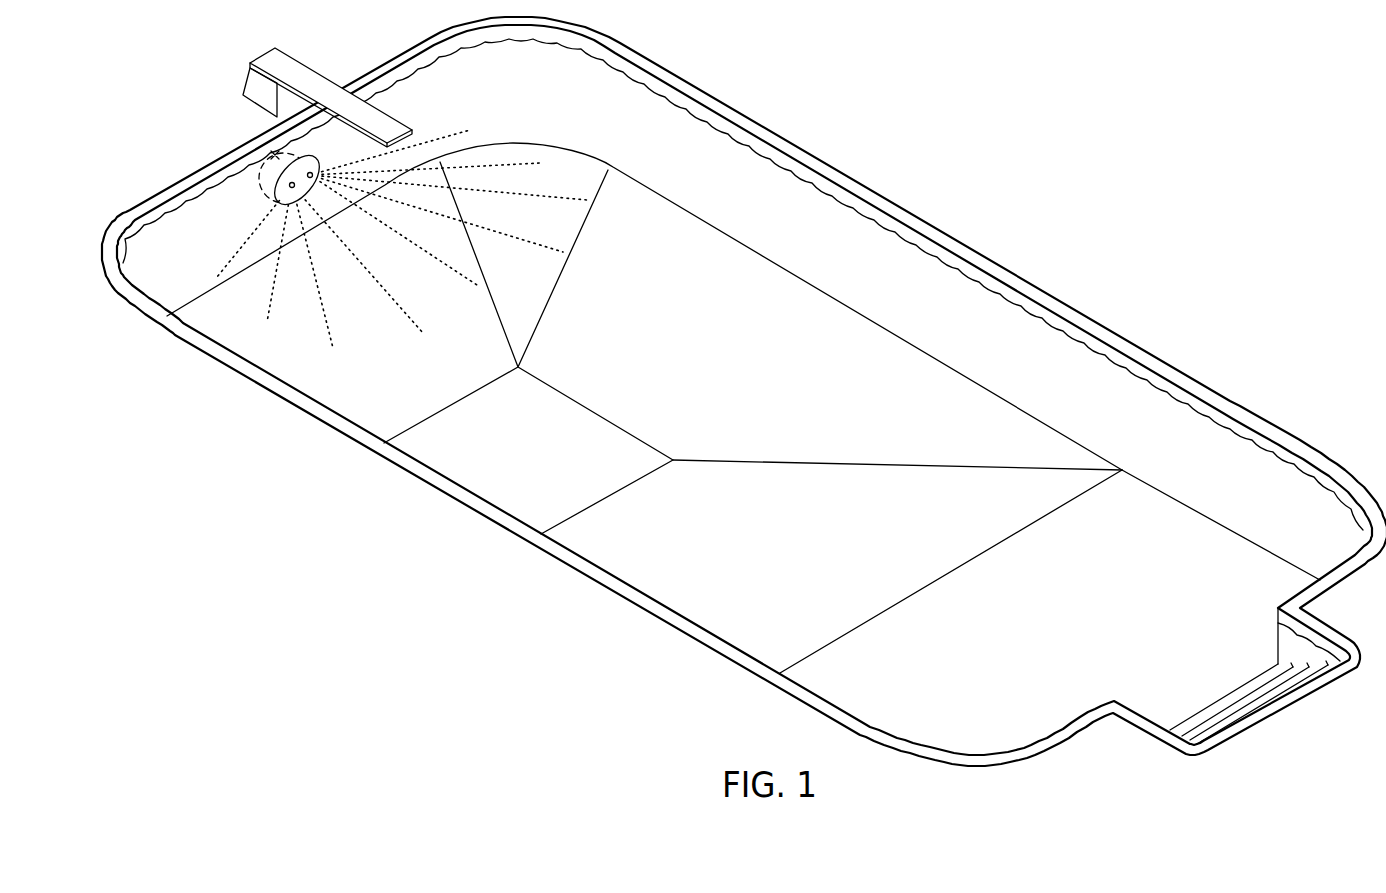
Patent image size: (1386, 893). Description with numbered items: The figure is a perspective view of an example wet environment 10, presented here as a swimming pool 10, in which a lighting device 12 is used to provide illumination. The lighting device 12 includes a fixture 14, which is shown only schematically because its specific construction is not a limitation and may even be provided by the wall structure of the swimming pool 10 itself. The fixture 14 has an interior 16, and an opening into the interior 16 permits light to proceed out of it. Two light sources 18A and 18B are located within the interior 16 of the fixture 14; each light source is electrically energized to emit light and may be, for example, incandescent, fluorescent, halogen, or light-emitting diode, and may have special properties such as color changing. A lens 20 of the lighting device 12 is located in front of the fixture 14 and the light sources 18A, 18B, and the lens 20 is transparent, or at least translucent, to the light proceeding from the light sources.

The wet environment 10 is at (1028, 254).
The lighting device 12 is at (259, 209).
The fixture 14 is at (250, 146).
The interior 16 is at (268, 171).
The light source 18A is at (312, 176).
The light source 18B is at (306, 187).
The lens 20 is at (295, 190).